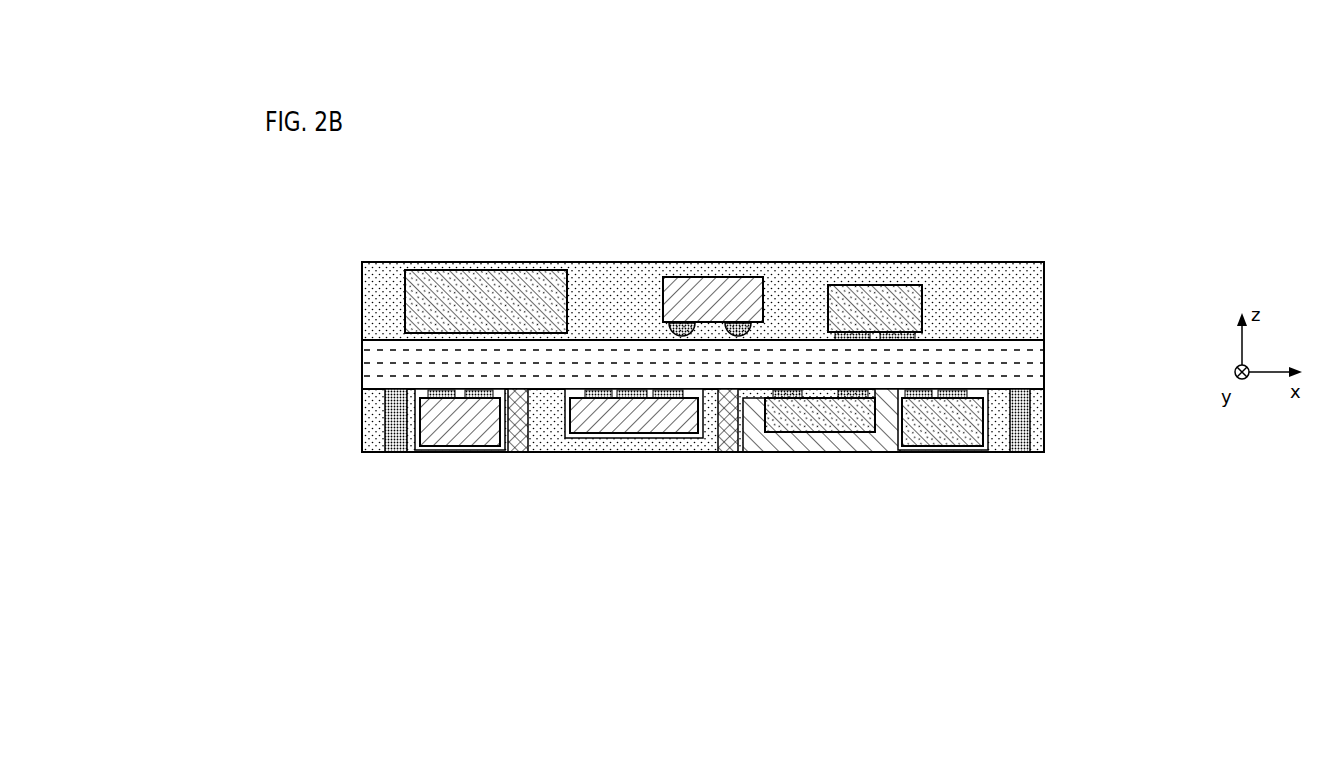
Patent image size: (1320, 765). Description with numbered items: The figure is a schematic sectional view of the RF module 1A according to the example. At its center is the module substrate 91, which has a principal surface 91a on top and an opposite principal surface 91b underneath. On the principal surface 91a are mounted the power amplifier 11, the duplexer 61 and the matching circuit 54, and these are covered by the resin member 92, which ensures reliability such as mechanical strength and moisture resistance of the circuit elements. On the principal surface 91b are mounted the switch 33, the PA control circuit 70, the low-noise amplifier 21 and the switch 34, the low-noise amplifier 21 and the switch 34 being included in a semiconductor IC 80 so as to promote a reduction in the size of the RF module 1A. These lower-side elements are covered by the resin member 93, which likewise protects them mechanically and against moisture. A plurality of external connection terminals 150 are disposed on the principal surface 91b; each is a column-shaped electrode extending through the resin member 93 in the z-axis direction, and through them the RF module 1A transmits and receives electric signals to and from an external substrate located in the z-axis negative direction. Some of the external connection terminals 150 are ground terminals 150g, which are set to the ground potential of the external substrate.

The RF module 1A is at (1093, 225).
The power amplifier 11 is at (497, 290).
The duplexer 61 is at (713, 290).
The matching circuit 54 is at (879, 300).
The resin member 92 is at (1030, 300).
The principal surface 91a is at (1030, 338).
The module substrate 91 is at (1045, 353).
The principal surface 91b is at (1035, 393).
The resin member 93 is at (1038, 435).
The external connection terminal 150 is at (393, 447).
The ground terminal 150g is at (517, 445).
The switch 33 is at (455, 432).
The PA control circuit 70 is at (633, 427).
The low-noise amplifier 21 is at (818, 423).
The semiconductor IC 80 is at (880, 438).
The switch 34 is at (947, 438).